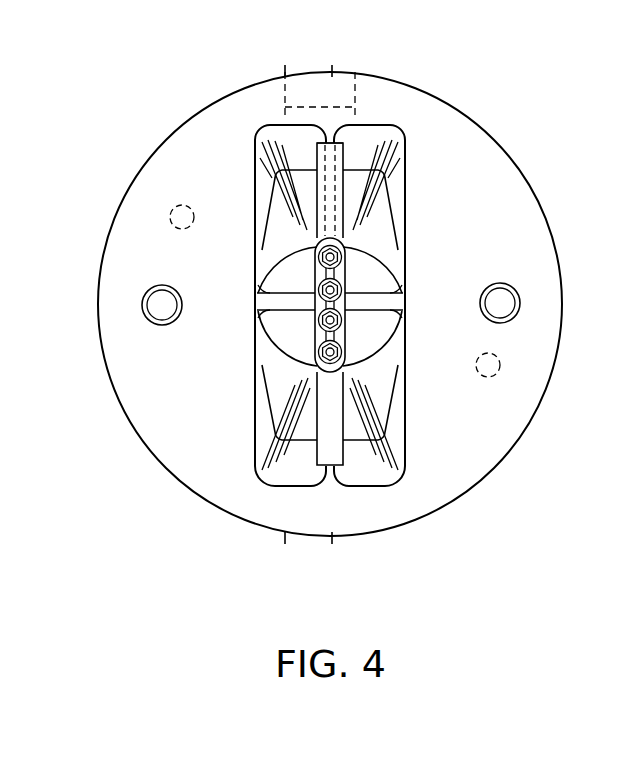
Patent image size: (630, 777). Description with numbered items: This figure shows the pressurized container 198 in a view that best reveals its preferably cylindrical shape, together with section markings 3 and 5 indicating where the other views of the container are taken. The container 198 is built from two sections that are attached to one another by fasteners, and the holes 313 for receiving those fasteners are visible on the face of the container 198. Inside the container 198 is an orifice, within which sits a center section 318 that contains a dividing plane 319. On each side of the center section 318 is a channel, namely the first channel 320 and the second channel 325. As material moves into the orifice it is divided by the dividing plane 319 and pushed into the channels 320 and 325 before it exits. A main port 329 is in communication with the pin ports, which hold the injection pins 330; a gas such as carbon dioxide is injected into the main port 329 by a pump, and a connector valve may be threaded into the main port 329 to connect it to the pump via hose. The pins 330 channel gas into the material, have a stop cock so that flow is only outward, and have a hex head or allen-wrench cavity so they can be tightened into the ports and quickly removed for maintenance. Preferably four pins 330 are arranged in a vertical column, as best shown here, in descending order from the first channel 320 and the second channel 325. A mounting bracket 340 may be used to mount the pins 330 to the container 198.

The pressurized container 198 is at (410, 60).
The holes 313 is at (170, 217).
The center section 318 is at (372, 263).
The dividing plane 319 is at (270, 312).
The first channel 320 is at (344, 163).
The second channel 325 is at (383, 401).
The main port 329 is at (345, 90).
The injection pins 330 is at (313, 353).
The mounting bracket 340 is at (345, 157).
The section line 3 is at (280, 567).
The section line 5 is at (327, 567).